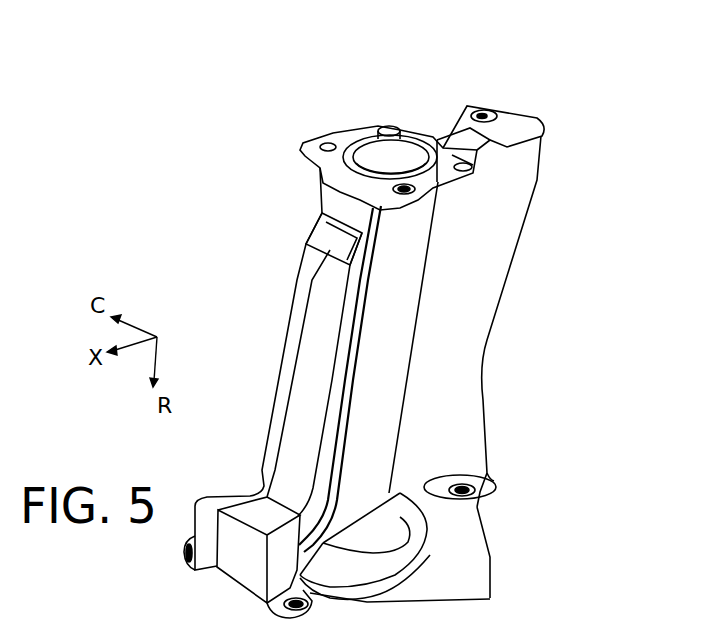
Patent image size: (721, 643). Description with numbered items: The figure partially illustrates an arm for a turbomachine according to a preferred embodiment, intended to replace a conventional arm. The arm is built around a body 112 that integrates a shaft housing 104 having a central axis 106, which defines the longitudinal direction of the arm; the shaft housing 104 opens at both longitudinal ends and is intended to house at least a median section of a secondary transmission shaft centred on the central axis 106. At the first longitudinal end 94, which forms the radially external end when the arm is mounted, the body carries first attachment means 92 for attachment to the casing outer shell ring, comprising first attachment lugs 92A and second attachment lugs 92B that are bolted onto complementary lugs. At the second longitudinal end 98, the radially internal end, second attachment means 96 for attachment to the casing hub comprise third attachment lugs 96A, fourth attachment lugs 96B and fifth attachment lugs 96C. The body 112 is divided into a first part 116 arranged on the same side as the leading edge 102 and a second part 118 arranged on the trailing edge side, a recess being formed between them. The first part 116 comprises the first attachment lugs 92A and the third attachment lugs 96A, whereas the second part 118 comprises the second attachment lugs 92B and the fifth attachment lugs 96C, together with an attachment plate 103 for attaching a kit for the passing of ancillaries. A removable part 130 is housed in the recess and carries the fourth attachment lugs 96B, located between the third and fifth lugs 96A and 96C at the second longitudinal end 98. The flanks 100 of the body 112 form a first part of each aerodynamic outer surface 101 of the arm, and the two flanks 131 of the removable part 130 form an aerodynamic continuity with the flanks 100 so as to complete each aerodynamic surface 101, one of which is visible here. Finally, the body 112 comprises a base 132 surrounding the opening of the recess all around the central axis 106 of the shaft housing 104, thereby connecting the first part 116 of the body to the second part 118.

The first attachment means 92 is at (552, 545).
The first attachment lugs 92A is at (490, 557).
The second attachment lugs 92B is at (490, 600).
The first longitudinal end 94 is at (493, 487).
The second attachment means 96 is at (497, 52).
The third attachment lugs 96A is at (487, 110).
The fourth attachment lugs 96B is at (396, 123).
The fifth attachment lugs 96C is at (320, 140).
The second longitudinal end 98 is at (537, 117).
The flanks of the body 100 is at (211, 285).
The aerodynamic outer surfaces 101 is at (397, 317).
The leading edge 102 is at (547, 150).
The attachment plate 103 is at (280, 380).
The shaft housing 104 is at (357, 140).
The central axis 106 is at (407, 120).
The body of the arm 112 is at (402, 363).
The first part of the body 116 is at (483, 238).
The second part of the body 118 is at (333, 194).
The removable part 130 is at (485, 166).
The flanks of the removable part 131 is at (393, 347).
The base 132 is at (413, 563).